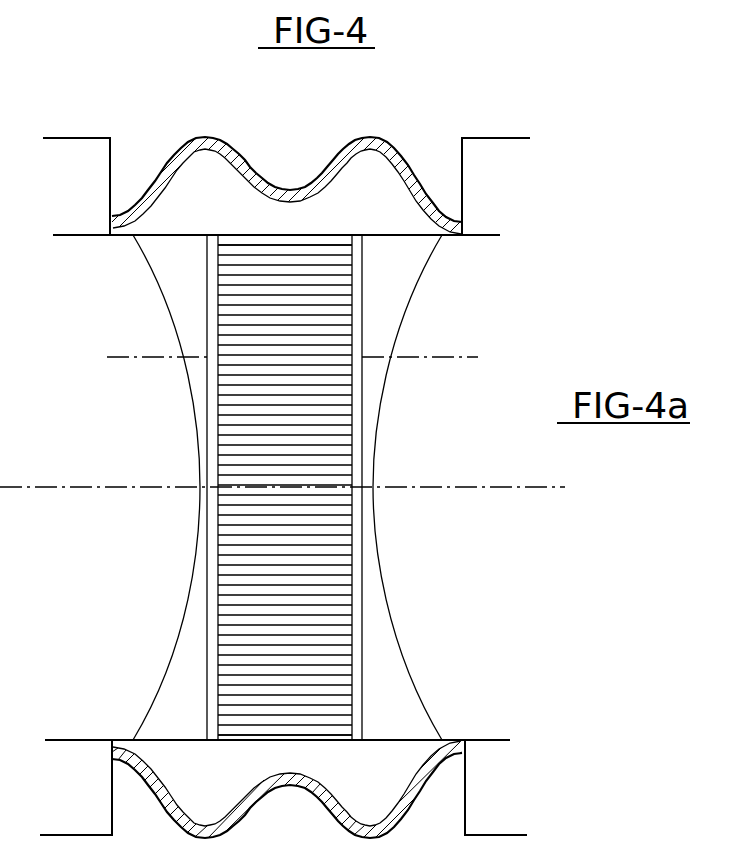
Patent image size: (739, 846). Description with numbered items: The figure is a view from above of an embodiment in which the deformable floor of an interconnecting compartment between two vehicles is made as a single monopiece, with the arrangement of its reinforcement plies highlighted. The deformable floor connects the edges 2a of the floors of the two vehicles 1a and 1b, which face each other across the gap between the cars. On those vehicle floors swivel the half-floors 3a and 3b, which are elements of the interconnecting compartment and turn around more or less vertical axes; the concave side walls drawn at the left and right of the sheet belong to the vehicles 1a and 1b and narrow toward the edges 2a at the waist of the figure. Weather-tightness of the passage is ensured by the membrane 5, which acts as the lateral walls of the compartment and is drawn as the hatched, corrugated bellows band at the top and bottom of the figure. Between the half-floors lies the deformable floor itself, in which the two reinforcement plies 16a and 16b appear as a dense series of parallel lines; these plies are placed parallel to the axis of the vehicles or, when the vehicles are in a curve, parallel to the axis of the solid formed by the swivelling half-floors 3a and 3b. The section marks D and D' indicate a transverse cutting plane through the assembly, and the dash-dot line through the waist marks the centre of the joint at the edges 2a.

The membrane 5 is at (249, 159).
The vehicle 1a is at (135, 286).
The vehicle 1b is at (447, 275).
The half-floor 3a is at (185, 253).
The half-floor 3b is at (378, 256).
The edge of the floor 2a is at (201, 458).
The reinforcement ply 16a is at (337, 676).
The reinforcement ply 16b is at (337, 676).
The section line D is at (157, 347).
The section line D' is at (426, 347).